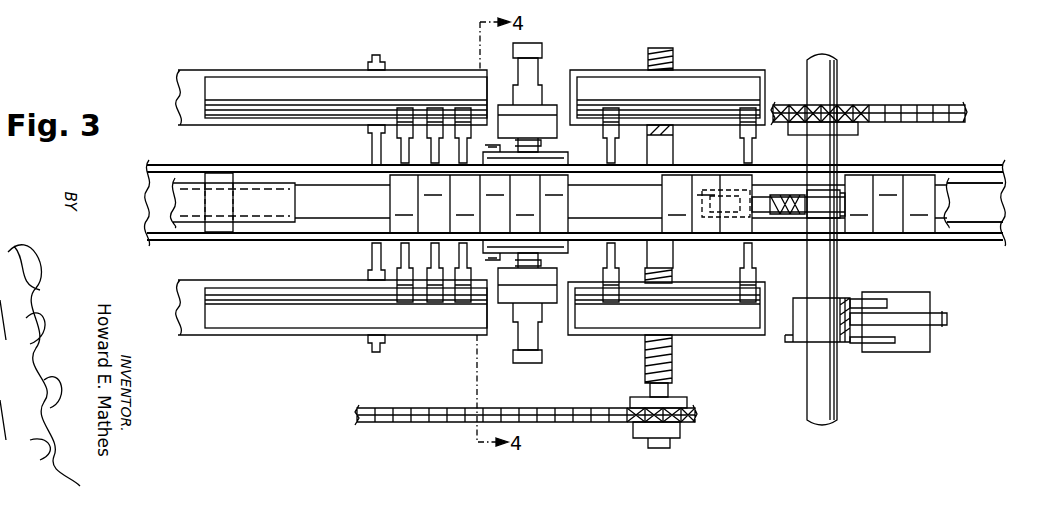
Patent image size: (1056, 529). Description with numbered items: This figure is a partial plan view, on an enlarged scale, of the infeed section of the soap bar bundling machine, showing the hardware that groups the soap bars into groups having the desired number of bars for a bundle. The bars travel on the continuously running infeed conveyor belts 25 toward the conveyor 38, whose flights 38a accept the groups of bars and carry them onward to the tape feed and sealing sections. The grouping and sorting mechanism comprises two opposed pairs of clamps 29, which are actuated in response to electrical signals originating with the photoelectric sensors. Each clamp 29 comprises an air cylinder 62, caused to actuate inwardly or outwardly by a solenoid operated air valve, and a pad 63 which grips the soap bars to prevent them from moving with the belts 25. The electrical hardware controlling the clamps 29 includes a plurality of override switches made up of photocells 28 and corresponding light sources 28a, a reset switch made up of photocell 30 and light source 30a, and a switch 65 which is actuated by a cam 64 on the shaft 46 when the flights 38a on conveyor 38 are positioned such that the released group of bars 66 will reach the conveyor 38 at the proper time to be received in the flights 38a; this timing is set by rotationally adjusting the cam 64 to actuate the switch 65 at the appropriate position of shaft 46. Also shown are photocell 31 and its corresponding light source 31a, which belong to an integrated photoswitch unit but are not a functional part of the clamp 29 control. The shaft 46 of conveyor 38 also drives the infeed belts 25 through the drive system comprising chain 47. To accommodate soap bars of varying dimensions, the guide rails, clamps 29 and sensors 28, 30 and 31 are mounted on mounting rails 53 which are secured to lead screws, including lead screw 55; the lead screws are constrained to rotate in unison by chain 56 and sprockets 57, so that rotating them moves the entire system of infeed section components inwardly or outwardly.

The infeed conveyor belts 25 is at (152, 225).
The photocells 28 is at (463, 292).
The light sources 28a is at (463, 112).
The clamps 29 is at (527, 50).
The photocell 30 is at (612, 292).
The light source 30a is at (611, 125).
The photocell 31 is at (747, 292).
The light source 31a is at (748, 125).
The conveyor 38 is at (785, 213).
The flights 38a is at (941, 197).
The shaft 46 is at (818, 398).
The chain 47 is at (905, 106).
The mounting rails 53 is at (248, 88).
The lead screw 55 is at (658, 36).
The chain 56 is at (560, 416).
The sprockets 57 is at (648, 432).
The air cylinders 62 is at (536, 95).
The pads 63 is at (560, 156).
The cam 64 is at (812, 325).
The switch 65 is at (890, 322).
The group of bars 66 is at (735, 176).